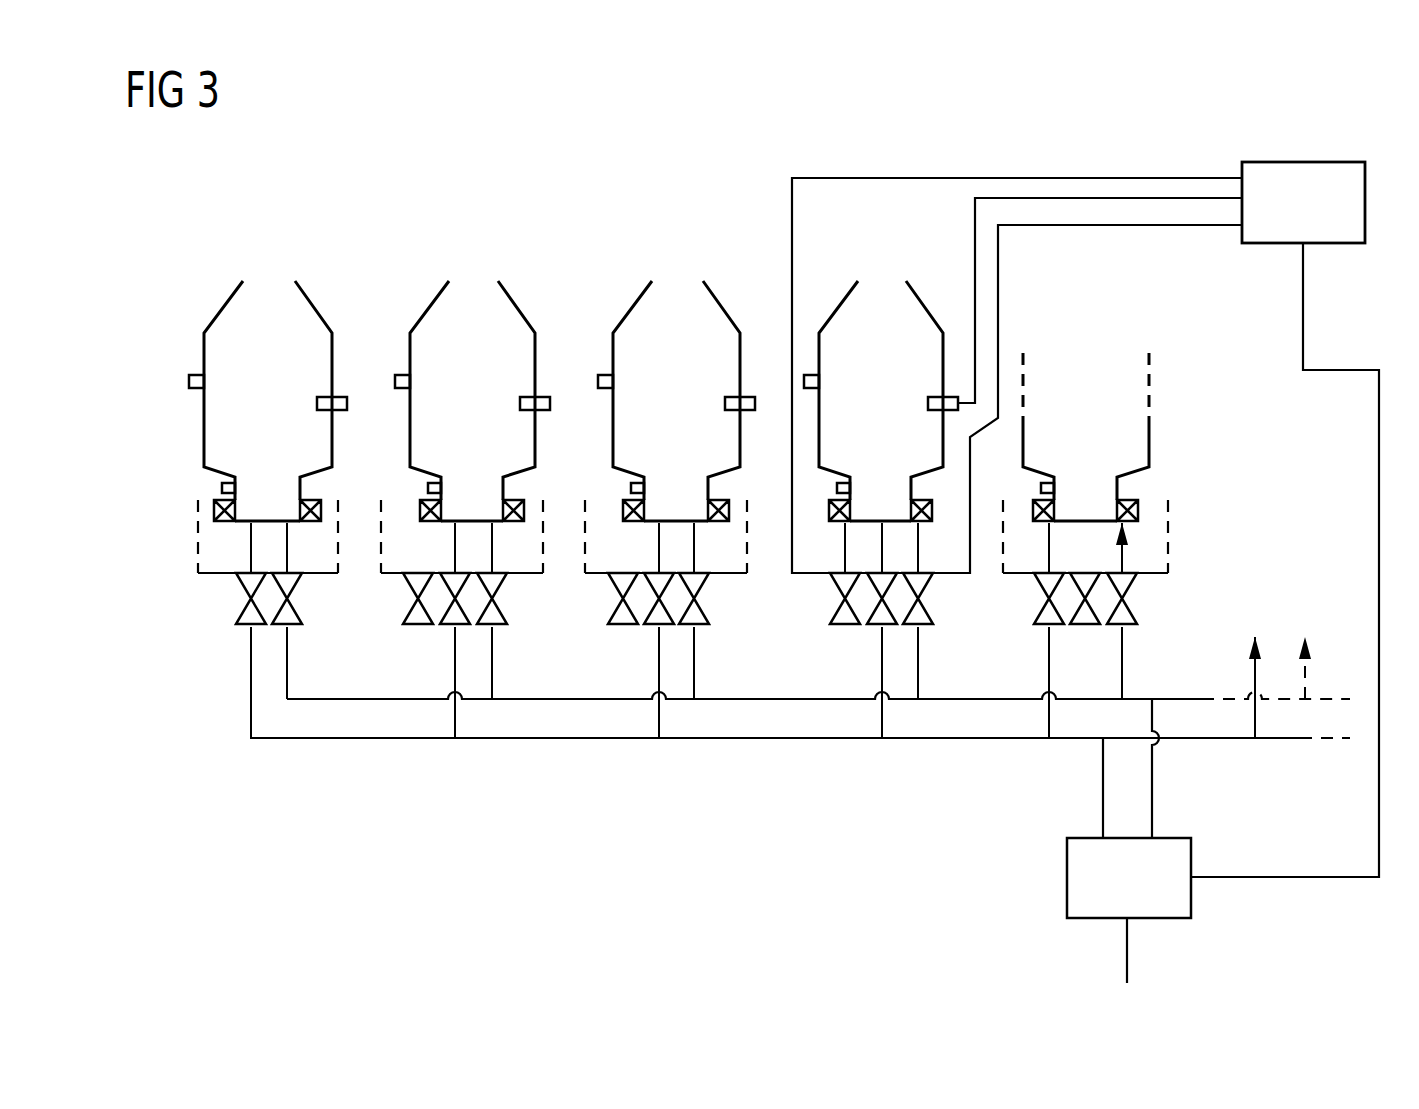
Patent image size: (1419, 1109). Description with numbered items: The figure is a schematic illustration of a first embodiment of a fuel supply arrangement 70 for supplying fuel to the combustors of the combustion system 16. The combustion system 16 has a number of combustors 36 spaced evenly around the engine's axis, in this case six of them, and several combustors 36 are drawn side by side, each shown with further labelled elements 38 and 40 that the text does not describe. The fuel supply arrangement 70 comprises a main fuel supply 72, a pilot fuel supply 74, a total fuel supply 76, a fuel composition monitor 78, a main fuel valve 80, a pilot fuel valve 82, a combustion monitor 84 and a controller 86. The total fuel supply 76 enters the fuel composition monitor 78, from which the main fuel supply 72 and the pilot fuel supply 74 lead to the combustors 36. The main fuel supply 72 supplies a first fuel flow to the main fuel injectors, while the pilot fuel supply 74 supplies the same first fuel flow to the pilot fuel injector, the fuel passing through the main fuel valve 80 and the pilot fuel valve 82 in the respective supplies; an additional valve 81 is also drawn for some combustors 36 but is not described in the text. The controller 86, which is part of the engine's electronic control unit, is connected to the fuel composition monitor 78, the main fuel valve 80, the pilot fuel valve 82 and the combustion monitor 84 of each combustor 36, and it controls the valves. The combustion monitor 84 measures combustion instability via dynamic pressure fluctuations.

The combustion system 16 is at (206, 238).
The combustor 36 is at (200, 328).
The combustor wall 38 is at (215, 412).
The burner 40 is at (214, 510).
The fuel supply arrangement 70 is at (666, 785).
The main fuel supply 72 is at (1103, 790).
The pilot fuel supply 74 is at (1152, 792).
The total fuel supply 76 is at (1127, 953).
The fuel composition monitor 78 is at (1067, 877).
The main fuel valve 80 is at (238, 612).
The valve 81 is at (608, 610).
The pilot fuel valve 82 is at (303, 612).
The combustion monitor 84 is at (338, 397).
The controller 86 is at (1300, 162).